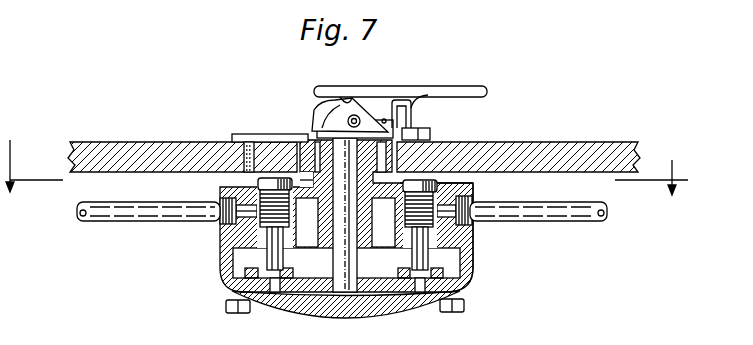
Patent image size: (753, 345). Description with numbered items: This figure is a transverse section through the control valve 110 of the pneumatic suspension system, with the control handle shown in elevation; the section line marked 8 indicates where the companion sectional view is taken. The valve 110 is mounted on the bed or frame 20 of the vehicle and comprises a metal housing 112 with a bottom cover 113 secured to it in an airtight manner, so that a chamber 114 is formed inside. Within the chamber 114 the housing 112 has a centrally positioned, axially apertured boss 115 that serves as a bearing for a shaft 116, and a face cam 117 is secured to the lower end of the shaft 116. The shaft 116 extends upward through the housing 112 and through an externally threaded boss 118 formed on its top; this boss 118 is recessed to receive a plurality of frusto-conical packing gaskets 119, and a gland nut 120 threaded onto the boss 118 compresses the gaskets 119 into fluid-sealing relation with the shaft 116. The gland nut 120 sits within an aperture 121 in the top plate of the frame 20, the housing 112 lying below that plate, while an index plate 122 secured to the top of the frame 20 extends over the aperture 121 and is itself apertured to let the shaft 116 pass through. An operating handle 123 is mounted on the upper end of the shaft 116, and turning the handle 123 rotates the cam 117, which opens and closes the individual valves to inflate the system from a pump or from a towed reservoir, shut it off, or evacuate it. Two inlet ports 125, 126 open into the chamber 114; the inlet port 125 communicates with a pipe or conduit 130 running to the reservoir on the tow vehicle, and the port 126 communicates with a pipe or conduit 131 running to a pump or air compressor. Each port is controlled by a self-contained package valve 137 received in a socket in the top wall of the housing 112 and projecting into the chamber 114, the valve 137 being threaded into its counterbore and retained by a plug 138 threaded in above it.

The frame 20 is at (573, 143).
The control valve 110 is at (292, 118).
The housing 112 is at (219, 250).
The bottom cover 113 is at (386, 310).
The chamber 114 is at (483, 261).
The boss 115 is at (367, 229).
The shaft 116 is at (340, 222).
The face cam 117 is at (300, 284).
The externally threaded boss 118 is at (440, 179).
The packing gaskets 119 is at (305, 176).
The gland nut 120 is at (440, 137).
The aperture 121 is at (260, 138).
The index plate 122 is at (290, 134).
The operating handle 123 is at (462, 91).
The inlet port 125 is at (238, 218).
The inlet port 126 is at (462, 240).
The pipe or conduit 130 is at (99, 216).
The pipe or conduit 131 is at (586, 222).
The package valve 137 is at (268, 250).
The plug 138 is at (219, 193).
The section line 8 is at (345, 178).